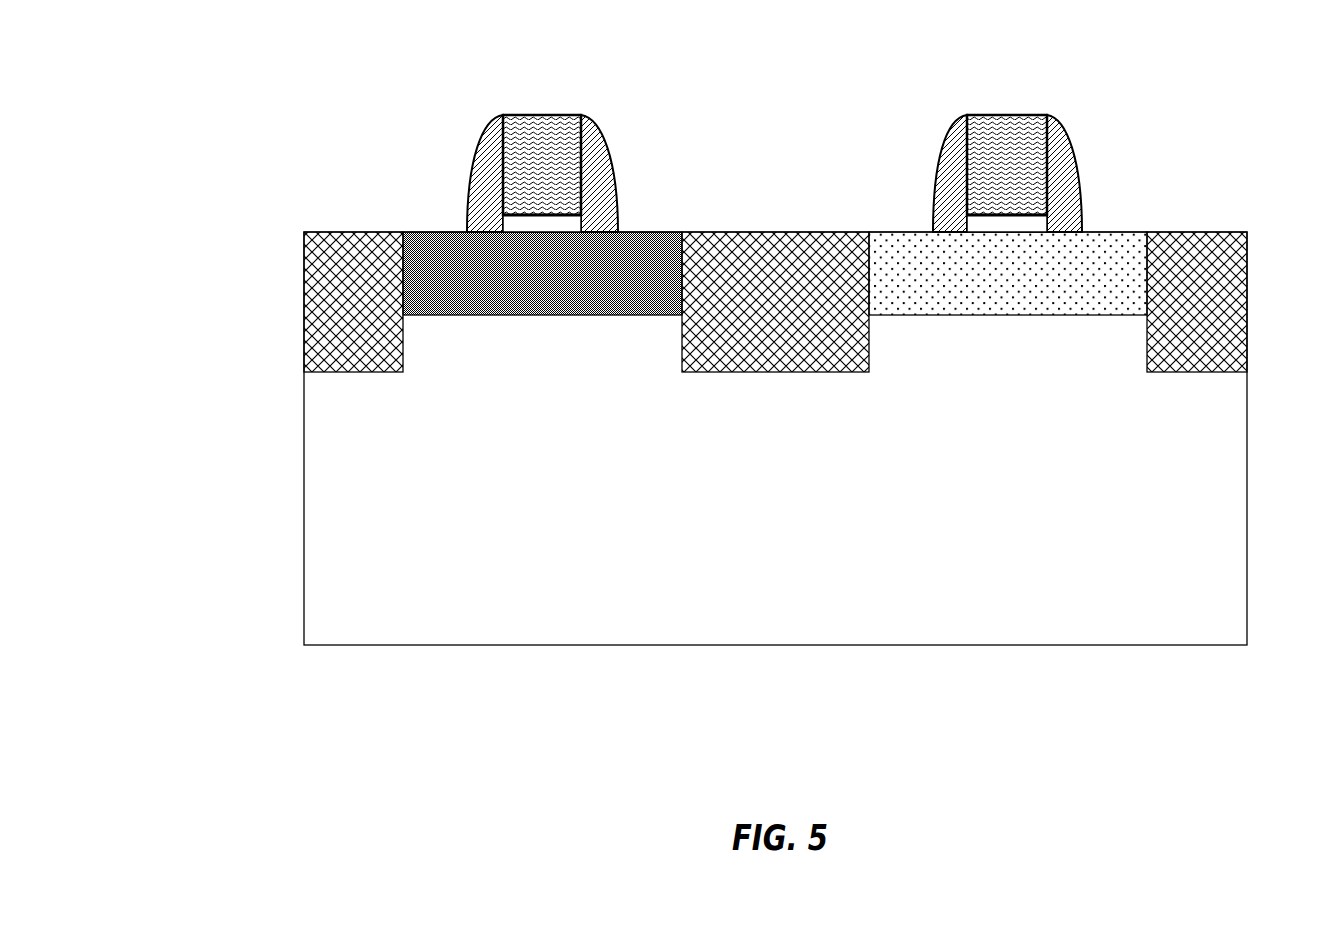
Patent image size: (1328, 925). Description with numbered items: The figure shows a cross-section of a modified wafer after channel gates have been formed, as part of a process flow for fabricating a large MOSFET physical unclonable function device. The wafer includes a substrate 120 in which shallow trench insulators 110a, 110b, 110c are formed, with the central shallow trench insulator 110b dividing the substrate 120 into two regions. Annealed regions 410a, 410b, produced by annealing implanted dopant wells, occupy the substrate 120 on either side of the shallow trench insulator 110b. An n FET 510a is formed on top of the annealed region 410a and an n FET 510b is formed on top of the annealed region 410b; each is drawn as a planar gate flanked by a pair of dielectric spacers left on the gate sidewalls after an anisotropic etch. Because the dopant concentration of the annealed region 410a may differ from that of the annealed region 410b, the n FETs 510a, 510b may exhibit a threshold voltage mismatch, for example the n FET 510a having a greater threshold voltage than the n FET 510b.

The substrate 120 is at (380, 622).
The shallow trench insulator 110a is at (357, 217).
The shallow trench insulator 110b is at (771, 386).
The shallow trench insulator 110c is at (1197, 215).
The annealed region 410a is at (442, 208).
The annealed region 410b is at (896, 210).
The n FET 510a is at (550, 78).
The n FET 510b is at (1025, 78).